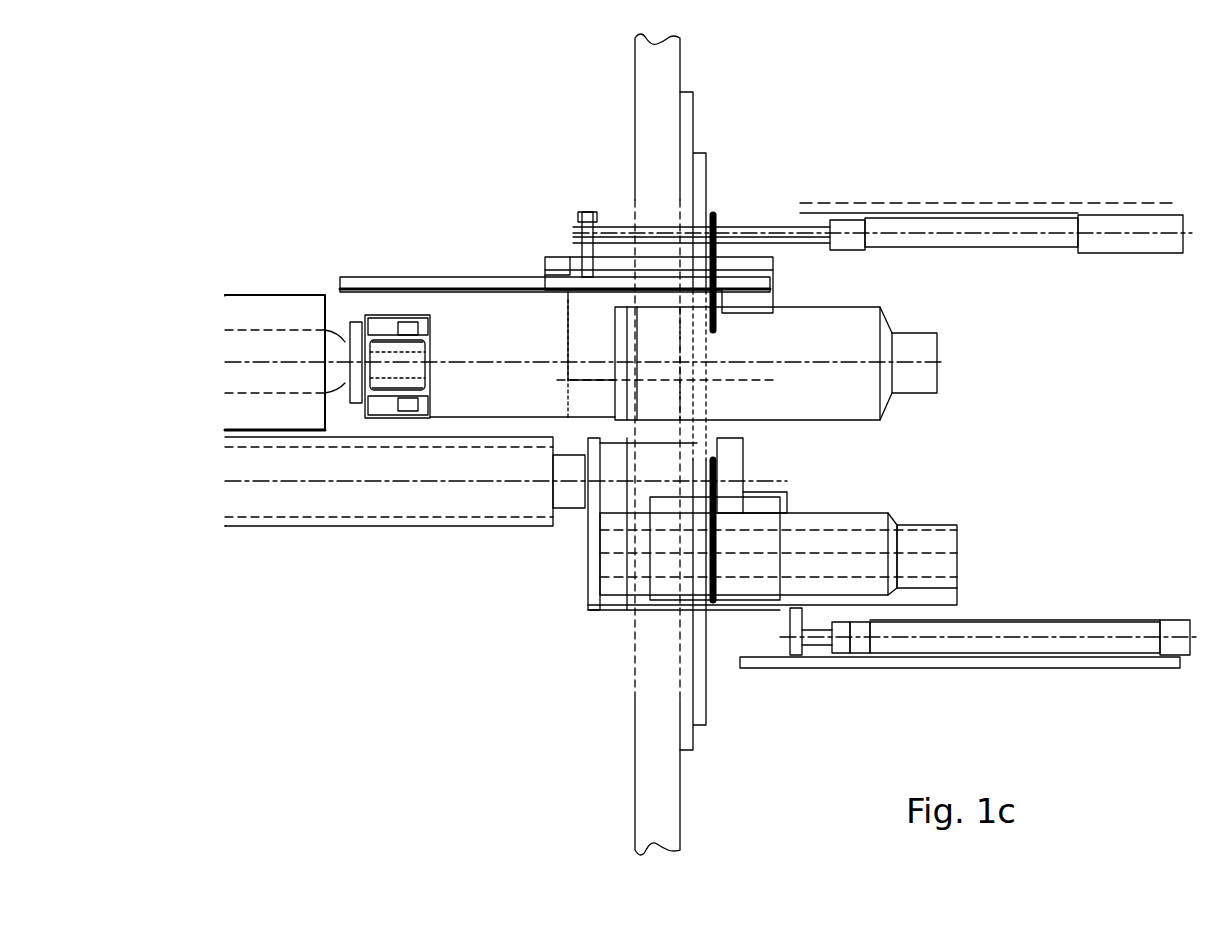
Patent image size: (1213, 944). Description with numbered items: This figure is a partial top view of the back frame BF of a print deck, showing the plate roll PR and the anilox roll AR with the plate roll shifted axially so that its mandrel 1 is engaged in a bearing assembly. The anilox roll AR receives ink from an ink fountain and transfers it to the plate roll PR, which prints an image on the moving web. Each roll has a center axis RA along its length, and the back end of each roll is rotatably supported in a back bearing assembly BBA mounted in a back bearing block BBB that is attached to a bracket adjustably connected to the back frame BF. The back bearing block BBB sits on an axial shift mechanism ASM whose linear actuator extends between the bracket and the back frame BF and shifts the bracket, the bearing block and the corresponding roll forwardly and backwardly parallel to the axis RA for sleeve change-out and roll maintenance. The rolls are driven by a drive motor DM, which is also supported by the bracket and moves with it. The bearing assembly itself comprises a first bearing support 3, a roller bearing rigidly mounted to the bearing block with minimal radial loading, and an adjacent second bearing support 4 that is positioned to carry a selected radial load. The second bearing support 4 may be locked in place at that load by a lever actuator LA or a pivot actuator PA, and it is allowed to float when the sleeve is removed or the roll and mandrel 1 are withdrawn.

The mandrel 1 is at (255, 347).
The first bearing support 3 is at (384, 316).
The second bearing support 4 is at (414, 334).
The lever actuator LA is at (402, 318).
The pivot actuator PA is at (402, 318).
The plate roll PR is at (250, 308).
The anilox roll AR is at (236, 533).
The back frame BF is at (683, 62).
The axial shift mechanism ASM is at (940, 207).
The drive motor DM is at (888, 330).
The center axis RA is at (945, 366).
The back bearing assembly BBA is at (405, 420).
The back bearing block BBB is at (488, 418).